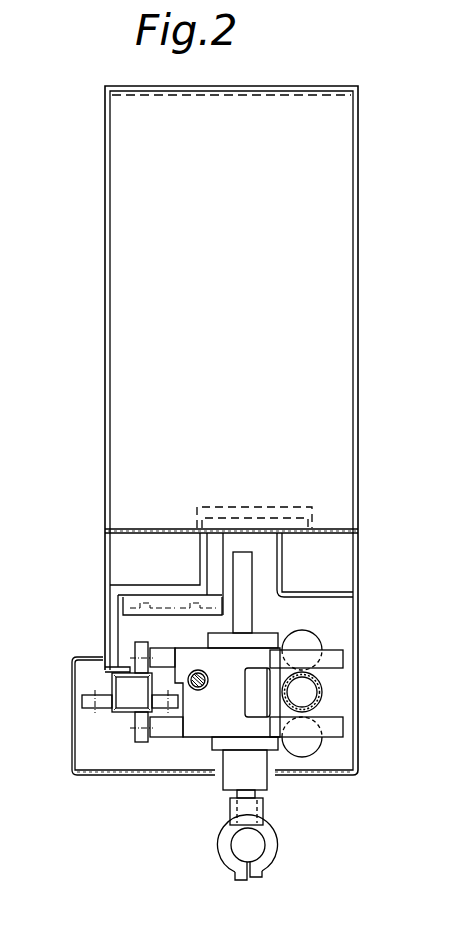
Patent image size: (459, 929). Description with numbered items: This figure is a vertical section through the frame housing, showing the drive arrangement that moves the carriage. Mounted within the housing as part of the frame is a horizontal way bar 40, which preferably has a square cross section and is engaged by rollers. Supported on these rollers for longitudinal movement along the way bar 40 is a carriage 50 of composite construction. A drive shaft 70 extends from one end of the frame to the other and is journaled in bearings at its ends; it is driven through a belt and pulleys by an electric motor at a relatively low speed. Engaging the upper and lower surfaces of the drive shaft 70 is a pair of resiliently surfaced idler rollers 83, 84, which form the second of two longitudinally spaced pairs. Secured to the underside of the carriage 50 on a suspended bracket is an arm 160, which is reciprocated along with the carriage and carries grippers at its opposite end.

The way bar 40 is at (125, 712).
The carriage 50 is at (198, 740).
The drive shaft 70 is at (323, 692).
The idler roller 83 is at (320, 634).
The idler roller 84 is at (322, 745).
The arm 160 is at (243, 847).